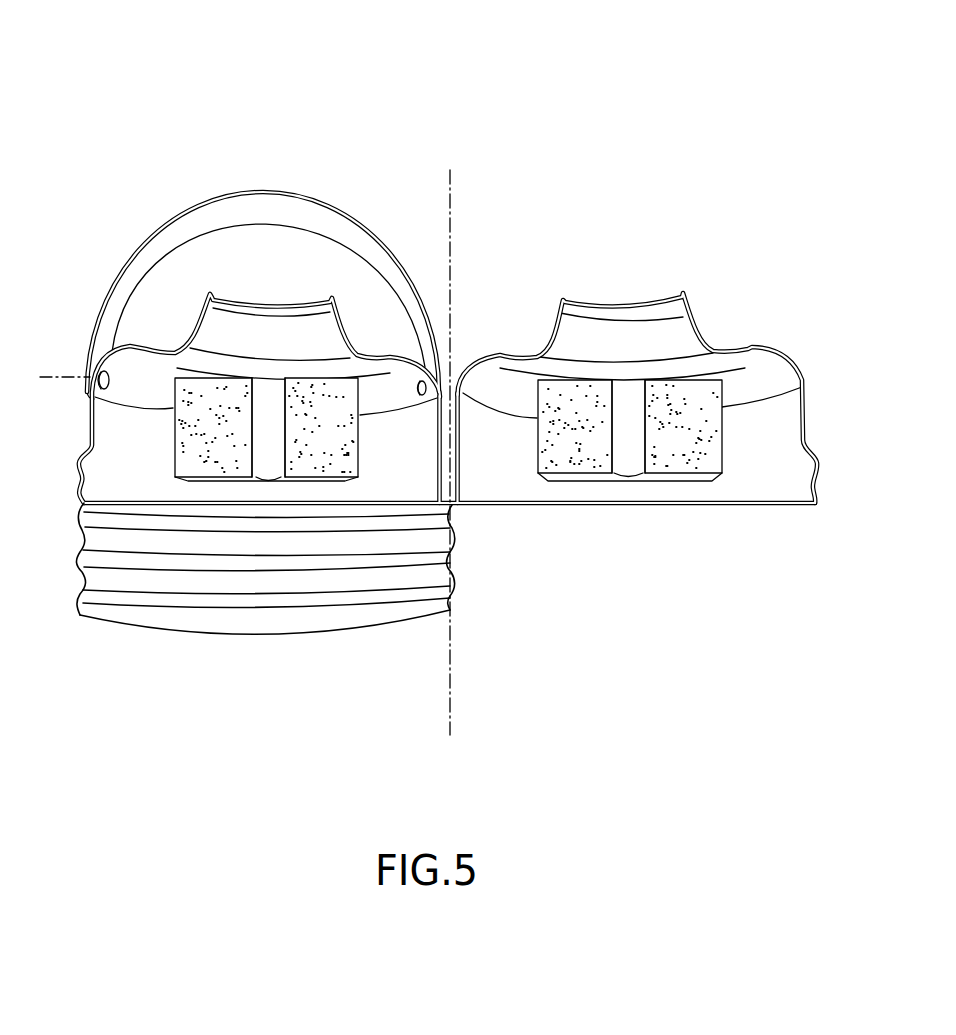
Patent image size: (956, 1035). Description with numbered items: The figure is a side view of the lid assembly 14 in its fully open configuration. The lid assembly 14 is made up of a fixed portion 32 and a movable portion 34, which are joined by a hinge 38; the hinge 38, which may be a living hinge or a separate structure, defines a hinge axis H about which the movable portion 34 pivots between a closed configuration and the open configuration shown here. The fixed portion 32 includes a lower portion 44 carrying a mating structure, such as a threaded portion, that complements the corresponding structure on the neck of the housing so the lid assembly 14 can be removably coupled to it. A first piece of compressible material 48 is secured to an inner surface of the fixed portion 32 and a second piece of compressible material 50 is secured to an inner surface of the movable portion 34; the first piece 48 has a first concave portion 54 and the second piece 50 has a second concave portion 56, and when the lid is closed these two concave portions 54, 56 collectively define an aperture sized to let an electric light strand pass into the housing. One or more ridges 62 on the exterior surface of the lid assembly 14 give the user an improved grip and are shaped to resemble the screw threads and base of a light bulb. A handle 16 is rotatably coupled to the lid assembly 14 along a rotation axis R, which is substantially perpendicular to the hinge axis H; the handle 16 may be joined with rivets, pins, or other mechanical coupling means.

The lid assembly 14 is at (444, 382).
The handle 16 is at (207, 210).
The fixed portion 32 is at (91, 428).
The movable portion 34 is at (805, 412).
The hinge 38 is at (456, 444).
The lower portion 44 is at (264, 595).
The first piece of compressible material 48 is at (184, 439).
The second piece of compressible material 50 is at (698, 455).
The first concave portion 54 is at (270, 465).
The second concave portion 56 is at (630, 465).
The ridges 62 is at (260, 596).
The rotation axis R is at (57, 372).
The hinge axis H is at (452, 212).